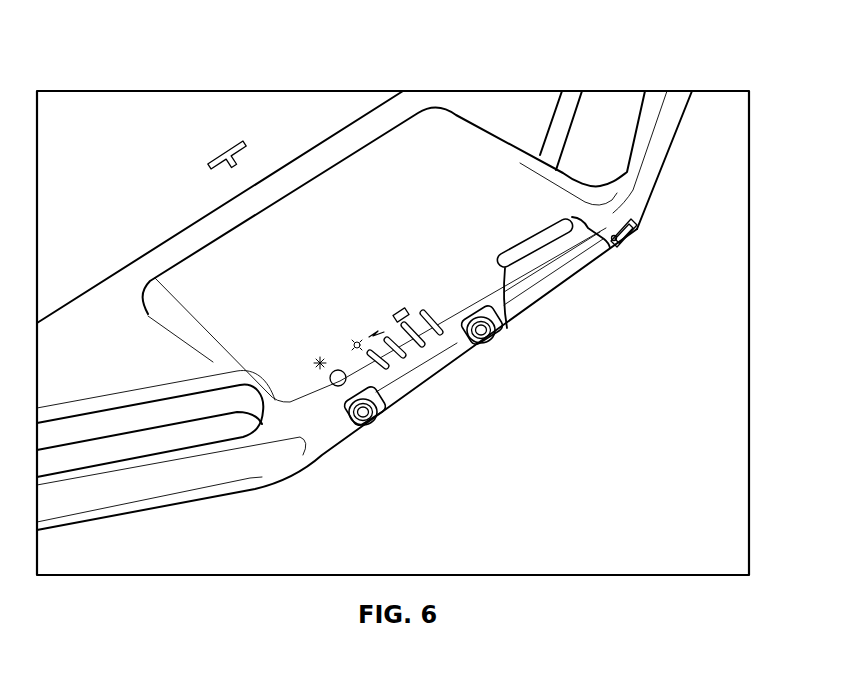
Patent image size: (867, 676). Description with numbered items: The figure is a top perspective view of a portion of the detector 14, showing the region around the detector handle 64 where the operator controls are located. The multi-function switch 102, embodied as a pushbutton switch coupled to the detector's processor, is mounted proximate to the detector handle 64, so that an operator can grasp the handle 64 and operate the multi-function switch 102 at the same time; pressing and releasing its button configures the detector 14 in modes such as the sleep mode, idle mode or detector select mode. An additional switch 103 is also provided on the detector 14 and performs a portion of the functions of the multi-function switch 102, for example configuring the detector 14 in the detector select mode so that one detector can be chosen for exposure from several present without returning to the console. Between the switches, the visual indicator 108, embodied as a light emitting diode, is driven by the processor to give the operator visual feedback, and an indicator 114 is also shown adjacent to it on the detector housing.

The detector 14 is at (683, 70).
The detector handle 64 is at (214, 417).
The multi-function switch 102 is at (372, 420).
The additional switch 103 is at (484, 334).
The visual indicator 108 is at (385, 366).
The indicator light 114 is at (407, 350).